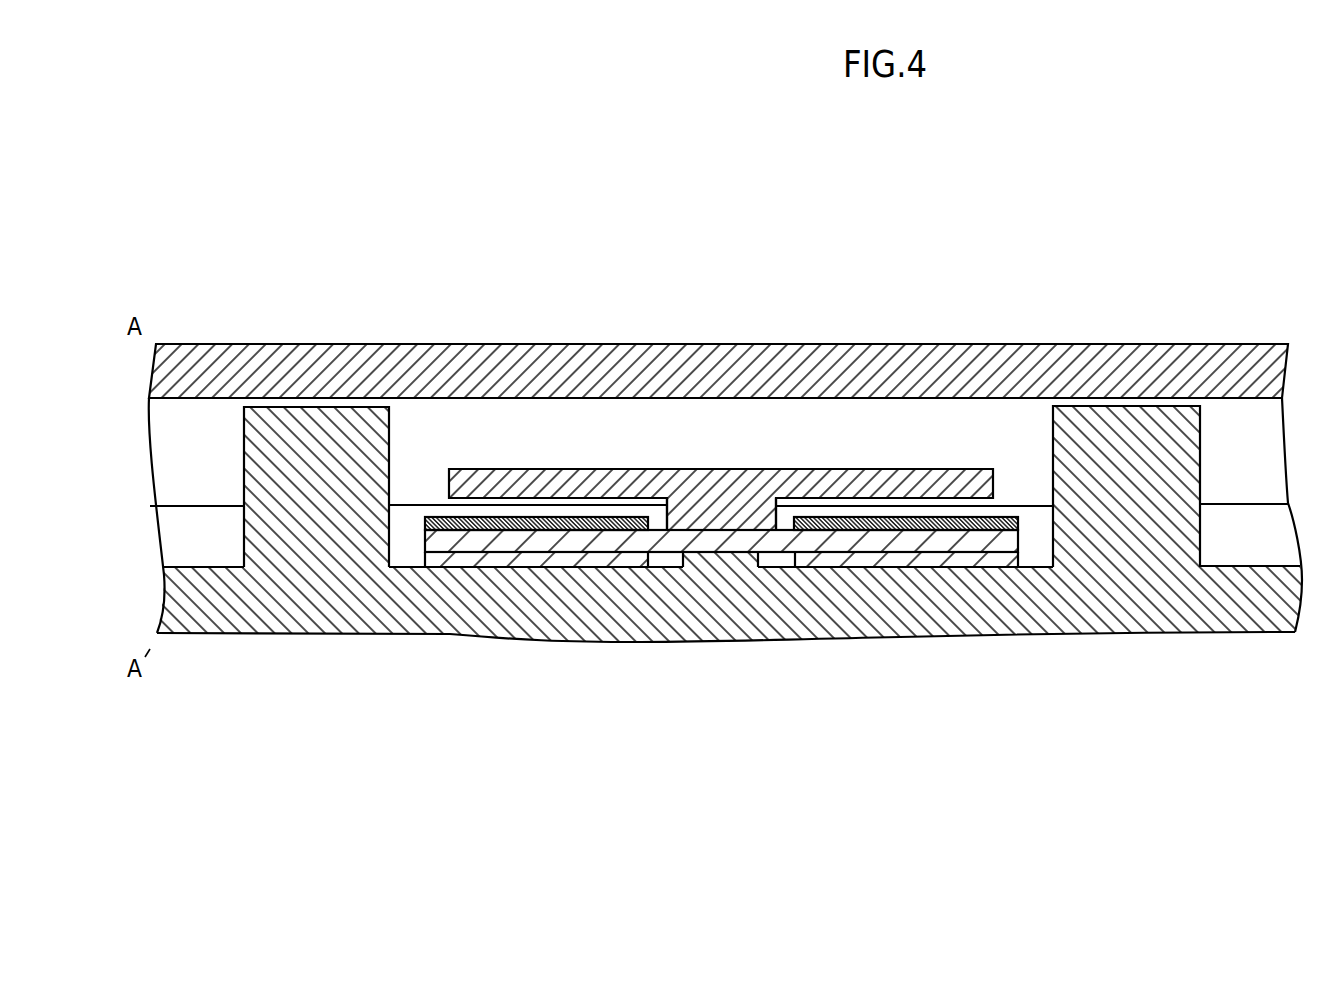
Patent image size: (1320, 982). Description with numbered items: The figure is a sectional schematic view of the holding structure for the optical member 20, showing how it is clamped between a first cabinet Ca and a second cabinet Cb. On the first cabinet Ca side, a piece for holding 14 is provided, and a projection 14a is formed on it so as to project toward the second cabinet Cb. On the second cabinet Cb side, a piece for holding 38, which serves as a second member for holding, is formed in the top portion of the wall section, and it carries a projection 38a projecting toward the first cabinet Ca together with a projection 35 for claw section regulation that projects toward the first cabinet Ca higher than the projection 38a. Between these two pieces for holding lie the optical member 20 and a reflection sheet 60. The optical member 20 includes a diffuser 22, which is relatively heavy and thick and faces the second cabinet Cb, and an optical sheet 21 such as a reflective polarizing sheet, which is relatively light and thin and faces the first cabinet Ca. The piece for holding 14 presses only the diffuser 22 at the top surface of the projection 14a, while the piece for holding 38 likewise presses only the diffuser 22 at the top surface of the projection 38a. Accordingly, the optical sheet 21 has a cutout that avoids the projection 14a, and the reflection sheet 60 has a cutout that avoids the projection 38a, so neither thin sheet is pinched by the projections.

The piece for holding 14 is at (575, 478).
The projection 14a is at (712, 508).
The optical member 20 is at (721, 384).
The optical sheet 21 is at (930, 520).
The diffuser 22 is at (872, 540).
The projection 35 is at (331, 435).
The piece for holding 38 is at (625, 583).
The projection 38a is at (708, 557).
The reflection sheet 60 is at (828, 548).
The first cabinet Ca is at (762, 368).
The second cabinet Cb is at (930, 615).